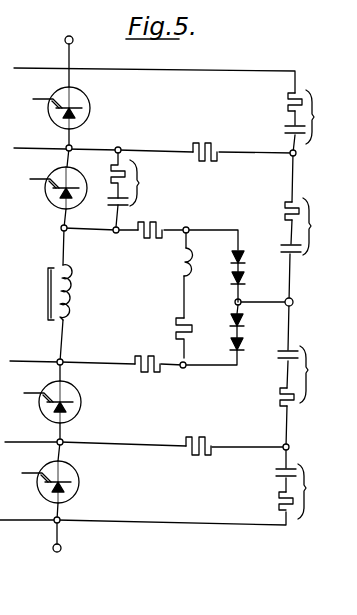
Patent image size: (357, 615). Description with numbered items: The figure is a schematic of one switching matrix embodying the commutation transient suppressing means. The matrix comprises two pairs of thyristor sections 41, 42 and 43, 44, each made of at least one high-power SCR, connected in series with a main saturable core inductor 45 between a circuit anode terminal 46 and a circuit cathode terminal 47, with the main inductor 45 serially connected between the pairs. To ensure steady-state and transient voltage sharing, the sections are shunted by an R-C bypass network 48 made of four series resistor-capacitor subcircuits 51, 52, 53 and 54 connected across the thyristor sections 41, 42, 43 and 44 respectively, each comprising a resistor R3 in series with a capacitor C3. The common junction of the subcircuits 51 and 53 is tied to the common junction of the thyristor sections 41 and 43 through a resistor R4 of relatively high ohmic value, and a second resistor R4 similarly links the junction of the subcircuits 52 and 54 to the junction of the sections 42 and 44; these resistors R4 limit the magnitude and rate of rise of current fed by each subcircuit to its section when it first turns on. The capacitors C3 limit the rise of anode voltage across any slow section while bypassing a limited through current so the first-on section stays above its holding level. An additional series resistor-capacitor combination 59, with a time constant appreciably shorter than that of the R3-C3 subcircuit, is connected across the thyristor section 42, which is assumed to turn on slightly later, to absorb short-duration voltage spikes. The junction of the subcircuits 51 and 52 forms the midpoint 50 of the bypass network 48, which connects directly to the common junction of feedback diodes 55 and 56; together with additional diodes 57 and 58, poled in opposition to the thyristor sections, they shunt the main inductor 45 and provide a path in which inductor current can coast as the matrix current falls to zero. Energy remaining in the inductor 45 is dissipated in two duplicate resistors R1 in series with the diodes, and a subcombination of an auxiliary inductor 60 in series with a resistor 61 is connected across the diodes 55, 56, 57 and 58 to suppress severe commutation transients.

The thyristor section 41 is at (42, 413).
The thyristor section 42 is at (48, 199).
The thyristor section 43 is at (41, 494).
The thyristor section 44 is at (49, 116).
The main saturable core inductor 45 is at (46, 293).
The circuit anode terminal 46 is at (52, 548).
The circuit cathode terminal 47 is at (64, 41).
The R-C bypass network 48 is at (322, 69).
The midpoint of the bypass network 50 is at (294, 302).
The series resistor-capacitor subcircuit 51 is at (308, 371).
The series resistor-capacitor subcircuit 52 is at (311, 227).
The series resistor-capacitor subcircuit 53 is at (308, 488).
The series resistor-capacitor subcircuit 54 is at (314, 117).
The feedback diode 55 is at (244, 323).
The feedback diode 56 is at (246, 281).
The feedback diode 57 is at (232, 346).
The feedback diode 58 is at (232, 258).
The additional series resistor-capacitor combination 59 is at (140, 184).
The auxiliary inductor 60 is at (178, 277).
The resistor 61 is at (175, 322).
The resistor R1 is at (142, 241).
The resistor R3 is at (286, 100).
The resistor R4 is at (194, 142).
The capacitor C3 is at (284, 130).